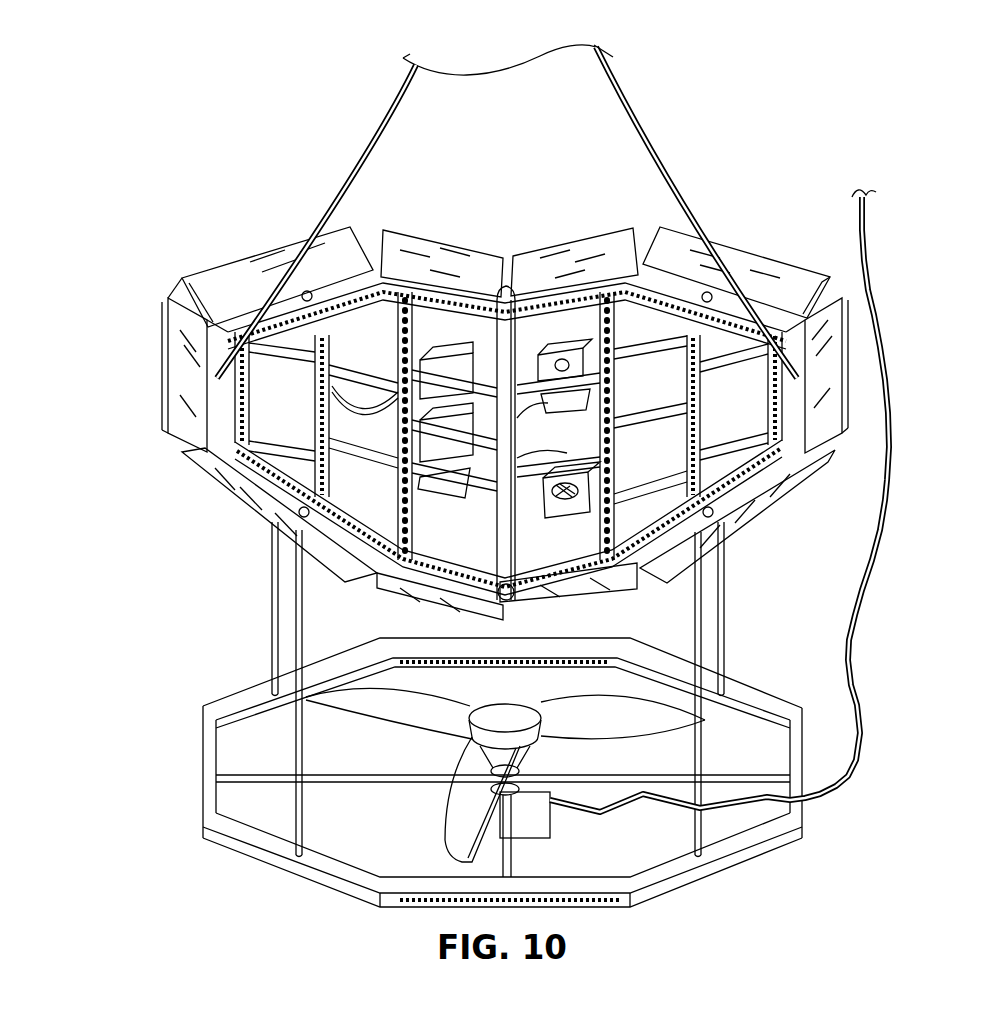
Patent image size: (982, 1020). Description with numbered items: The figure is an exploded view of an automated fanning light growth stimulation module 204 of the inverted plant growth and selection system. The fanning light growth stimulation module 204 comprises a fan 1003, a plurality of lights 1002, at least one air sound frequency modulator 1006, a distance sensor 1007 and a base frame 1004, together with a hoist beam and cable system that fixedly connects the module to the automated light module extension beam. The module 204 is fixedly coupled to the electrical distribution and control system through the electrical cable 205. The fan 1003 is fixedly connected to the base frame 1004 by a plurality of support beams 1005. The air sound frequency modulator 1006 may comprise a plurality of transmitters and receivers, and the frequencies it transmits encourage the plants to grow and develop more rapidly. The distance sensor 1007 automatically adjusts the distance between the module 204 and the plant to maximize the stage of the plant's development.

The automated fanning light growth stimulation module 204 is at (730, 195).
The electrical cable 205 is at (871, 608).
The lights 1002 is at (391, 501).
The fan 1003 is at (580, 715).
The base frame 1004 is at (328, 865).
The support beams 1005 is at (289, 712).
The air sound frequency modulator 1006 is at (582, 486).
The distance sensor 1007 is at (578, 342).